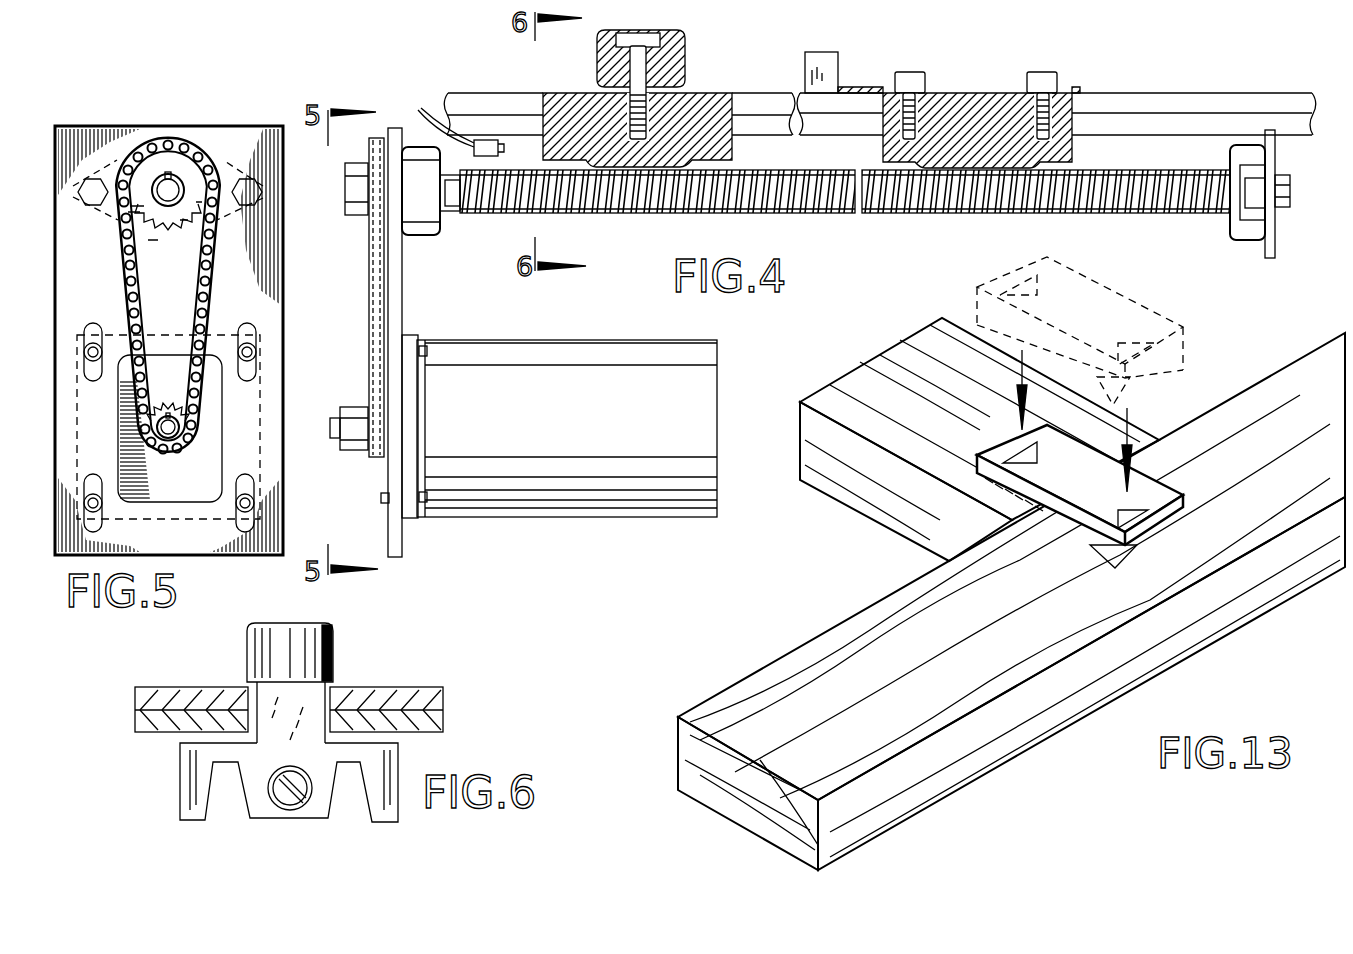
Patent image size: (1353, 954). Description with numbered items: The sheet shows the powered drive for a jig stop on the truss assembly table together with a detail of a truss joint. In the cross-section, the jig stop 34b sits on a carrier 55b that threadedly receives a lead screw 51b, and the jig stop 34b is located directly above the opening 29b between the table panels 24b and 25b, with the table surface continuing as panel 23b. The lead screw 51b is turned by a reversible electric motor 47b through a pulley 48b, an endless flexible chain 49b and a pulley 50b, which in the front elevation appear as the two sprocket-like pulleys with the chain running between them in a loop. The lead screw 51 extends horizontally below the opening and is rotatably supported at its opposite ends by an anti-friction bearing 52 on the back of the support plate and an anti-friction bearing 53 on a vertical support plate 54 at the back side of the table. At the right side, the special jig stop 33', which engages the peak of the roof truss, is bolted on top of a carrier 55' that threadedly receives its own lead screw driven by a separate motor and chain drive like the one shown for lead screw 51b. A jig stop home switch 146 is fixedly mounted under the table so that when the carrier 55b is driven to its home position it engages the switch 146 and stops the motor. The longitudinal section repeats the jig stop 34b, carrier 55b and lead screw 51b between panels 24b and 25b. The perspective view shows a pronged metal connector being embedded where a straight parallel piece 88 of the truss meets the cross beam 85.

In FIG. 4, the board 23b is at (1134, 100).
In FIG. 4, the table panel 24b is at (489, 100).
In FIG. 6, the table panel 24b is at (202, 693).
In FIG. 6, the table panel 25b is at (428, 695).
In FIG. 6, the opening 29b is at (330, 690).
In FIG. 4, the special jig stop 33' is at (942, 58).
In FIG. 4, the jig stop 34b is at (687, 47).
In FIG. 6, the jig stop 34b is at (335, 640).
In FIG. 4, the reversible electric motor 47b is at (588, 430).
In FIG. 5, the pulley 48b is at (168, 405).
In FIG. 5, the endless flexible chain 49b is at (121, 273).
In FIG. 4, the endless flexible chain 49b is at (368, 268).
In FIG. 5, the pulley 50b is at (172, 232).
In FIG. 4, the lead screw 51 is at (1161, 212).
In FIG. 4, the lead screw 51b is at (806, 205).
In FIG. 6, the lead screw 51b is at (280, 805).
In FIG. 4, the anti-friction bearing 52 is at (432, 238).
In FIG. 4, the anti-friction bearing 53 is at (1246, 243).
In FIG. 4, the vertical support plate 54 is at (1276, 250).
In FIG. 4, the carrier 55b is at (713, 100).
In FIG. 6, the carrier 55b is at (185, 760).
In FIG. 4, the carrier 55' is at (977, 110).
In FIG. 13, the cross beam 85 is at (734, 685).
In FIG. 13, the straight parallel piece 88 is at (840, 500).
In FIG. 4, the jig stop home switch 146 is at (494, 152).